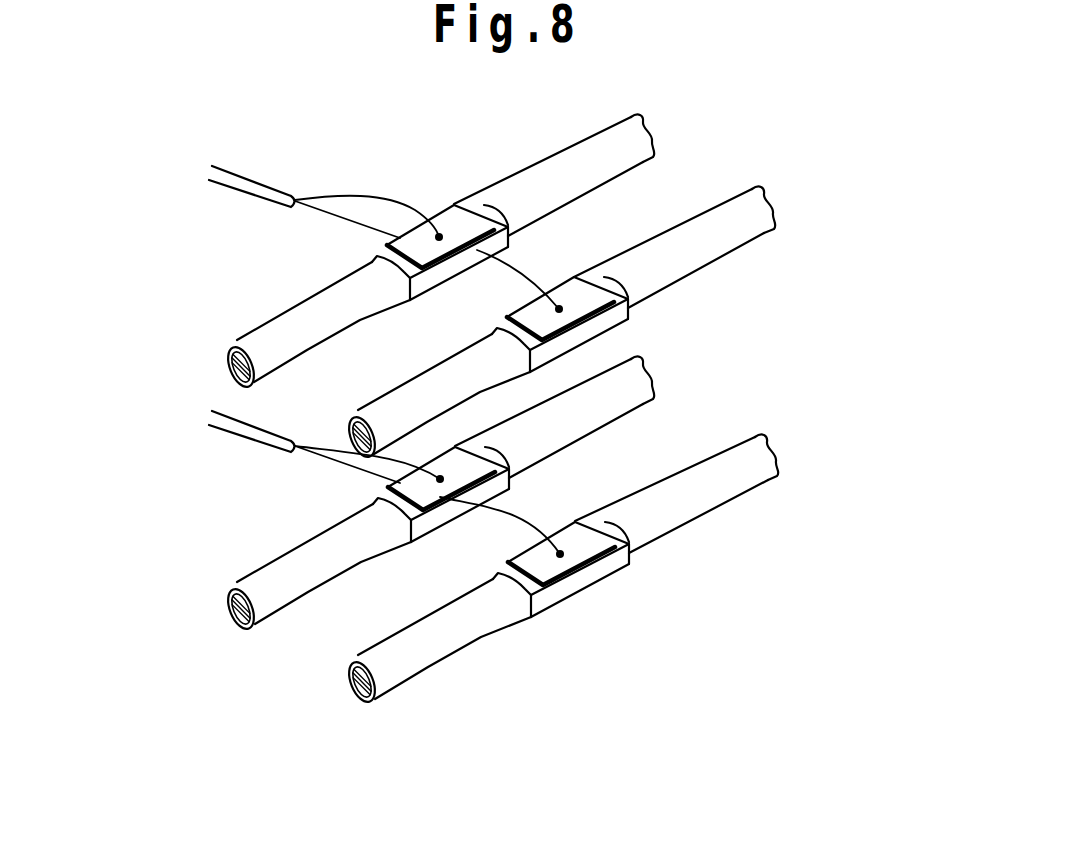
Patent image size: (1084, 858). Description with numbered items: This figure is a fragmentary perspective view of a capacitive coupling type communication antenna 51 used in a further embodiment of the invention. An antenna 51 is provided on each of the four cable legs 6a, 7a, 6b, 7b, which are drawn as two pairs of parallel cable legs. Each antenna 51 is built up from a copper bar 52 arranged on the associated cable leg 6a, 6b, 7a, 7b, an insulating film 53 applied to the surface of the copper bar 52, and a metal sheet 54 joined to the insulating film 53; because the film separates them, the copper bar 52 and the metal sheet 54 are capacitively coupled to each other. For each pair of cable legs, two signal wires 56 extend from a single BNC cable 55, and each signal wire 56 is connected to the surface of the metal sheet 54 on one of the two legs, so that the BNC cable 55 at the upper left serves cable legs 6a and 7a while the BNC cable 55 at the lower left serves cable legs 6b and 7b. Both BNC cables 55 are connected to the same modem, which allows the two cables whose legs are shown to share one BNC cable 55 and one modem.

The cable leg 6a is at (585, 143).
The cable leg 7a is at (733, 246).
The cable leg 6b is at (647, 377).
The cable leg 7b is at (774, 455).
The capacitive coupling type communication antenna 51 is at (474, 189).
The copper bar 52 is at (420, 290).
The insulating film 53 is at (371, 261).
The metal sheet 54 is at (440, 222).
The BNC cable 55 is at (242, 190).
The signal wire 56 is at (337, 199).